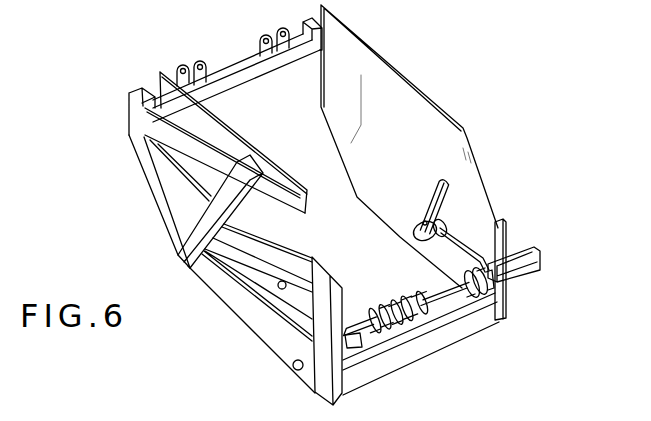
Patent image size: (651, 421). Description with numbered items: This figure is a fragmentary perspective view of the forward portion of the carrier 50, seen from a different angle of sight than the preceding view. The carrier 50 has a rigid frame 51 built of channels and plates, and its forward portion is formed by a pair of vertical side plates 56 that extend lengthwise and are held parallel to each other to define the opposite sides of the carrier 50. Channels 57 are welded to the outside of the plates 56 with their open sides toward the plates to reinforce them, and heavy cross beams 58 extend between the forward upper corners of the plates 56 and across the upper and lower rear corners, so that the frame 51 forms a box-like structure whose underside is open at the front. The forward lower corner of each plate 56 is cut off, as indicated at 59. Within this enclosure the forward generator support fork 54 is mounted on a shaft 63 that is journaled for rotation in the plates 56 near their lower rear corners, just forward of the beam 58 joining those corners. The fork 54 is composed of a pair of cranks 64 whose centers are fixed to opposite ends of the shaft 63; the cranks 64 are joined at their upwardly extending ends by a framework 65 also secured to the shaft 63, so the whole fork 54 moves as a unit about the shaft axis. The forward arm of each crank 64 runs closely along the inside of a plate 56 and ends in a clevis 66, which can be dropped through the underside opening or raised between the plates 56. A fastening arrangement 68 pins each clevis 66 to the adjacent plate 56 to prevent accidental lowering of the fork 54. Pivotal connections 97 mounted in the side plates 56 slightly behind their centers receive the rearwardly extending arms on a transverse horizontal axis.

The carrier 50 is at (146, 182).
The frame 51 is at (272, 335).
The forward generator support fork 54 is at (385, 314).
The vertical side plates 56 is at (403, 100).
The channels 57 is at (237, 243).
The cross beams 58 is at (238, 58).
The cut-off forward lower corner 59 is at (156, 212).
The shaft 63 is at (437, 295).
The cranks 64 is at (455, 256).
The framework 65 is at (522, 272).
The clevis 66 is at (441, 230).
The fastening arrangement 68 is at (437, 197).
The pivotal connections 97 is at (299, 243).